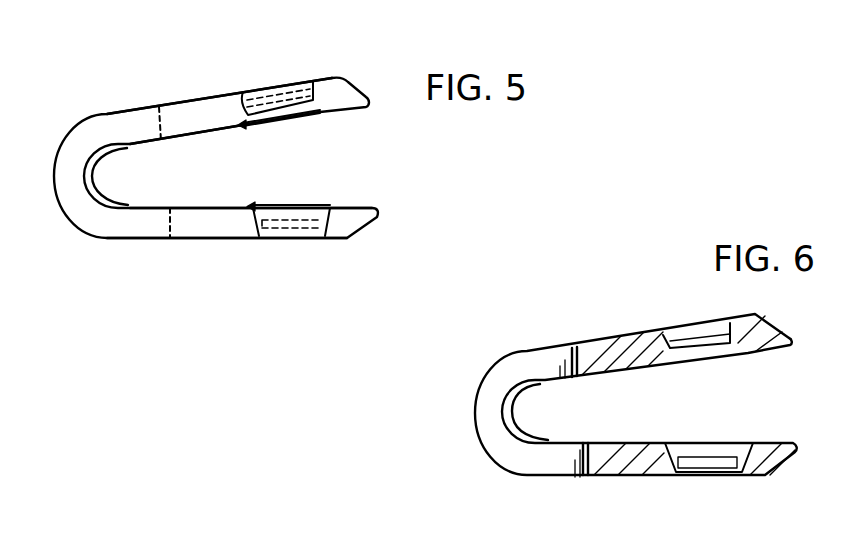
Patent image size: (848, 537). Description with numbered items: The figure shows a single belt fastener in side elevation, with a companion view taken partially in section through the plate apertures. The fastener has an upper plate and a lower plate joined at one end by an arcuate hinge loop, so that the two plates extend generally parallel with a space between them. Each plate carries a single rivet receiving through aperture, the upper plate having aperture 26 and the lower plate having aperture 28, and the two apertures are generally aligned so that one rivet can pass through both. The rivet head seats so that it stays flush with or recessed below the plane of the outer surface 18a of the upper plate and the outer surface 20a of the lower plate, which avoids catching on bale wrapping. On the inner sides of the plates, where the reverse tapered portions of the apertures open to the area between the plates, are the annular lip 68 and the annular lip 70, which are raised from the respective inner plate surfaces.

In FIG. 5, the outer surface of upper plate 18a is at (210, 95).
In FIG. 5, the outer surface of lower plate 20a is at (221, 238).
In FIG. 5, the rivet receiving through aperture 26 is at (298, 80).
In FIG. 6, the rivet receiving through aperture 26 is at (692, 320).
In FIG. 5, the rivet receiving through aperture 28 is at (300, 248).
In FIG. 6, the rivet receiving through aperture 28 is at (706, 482).
In FIG. 5, the annular lip 68 is at (322, 114).
In FIG. 5, the annular lip 70 is at (328, 206).